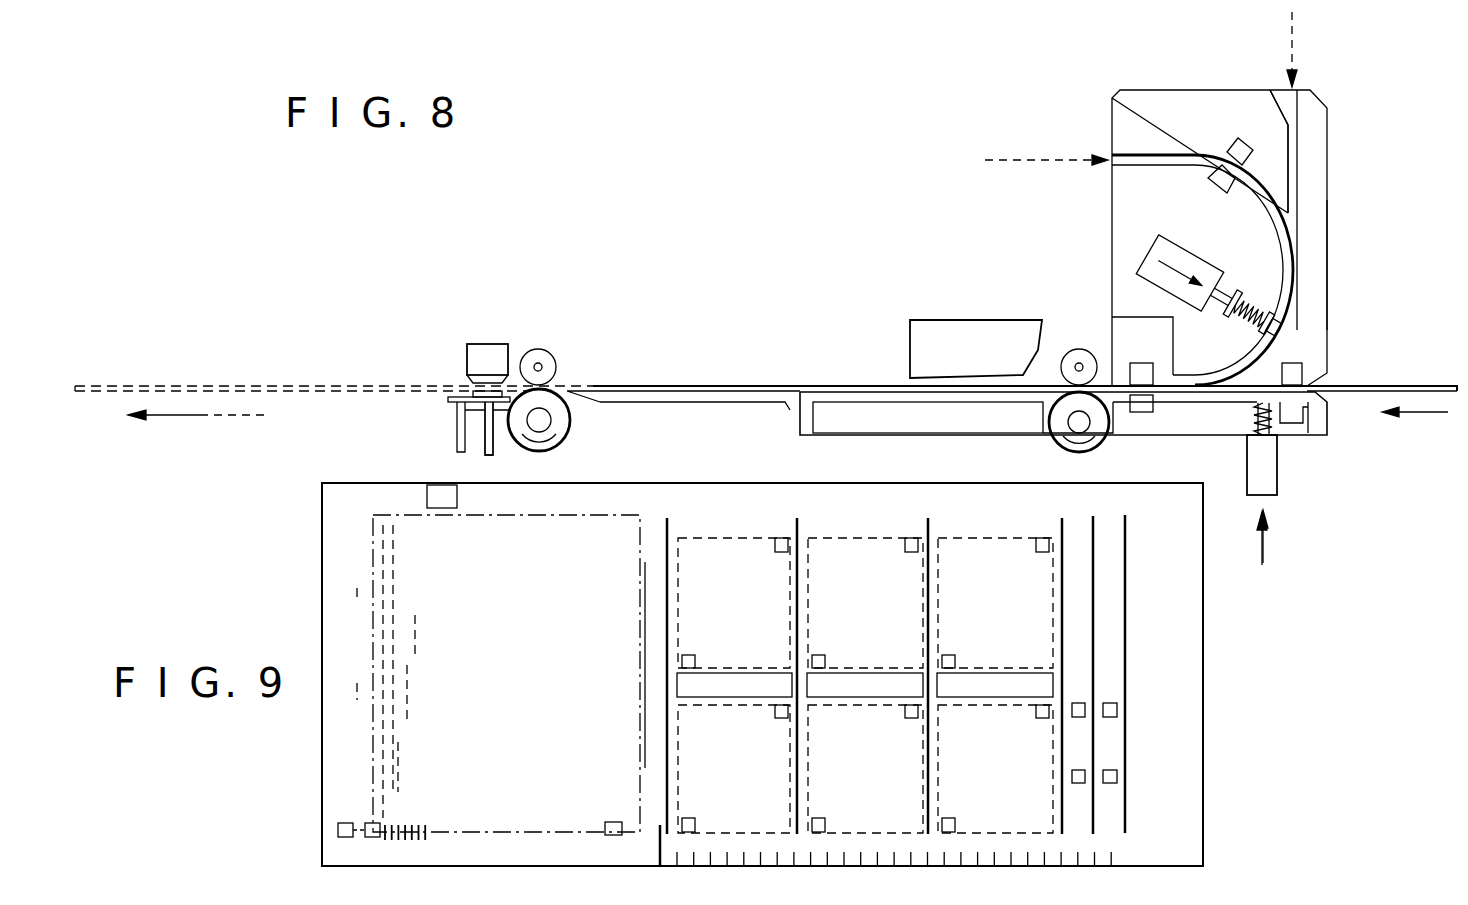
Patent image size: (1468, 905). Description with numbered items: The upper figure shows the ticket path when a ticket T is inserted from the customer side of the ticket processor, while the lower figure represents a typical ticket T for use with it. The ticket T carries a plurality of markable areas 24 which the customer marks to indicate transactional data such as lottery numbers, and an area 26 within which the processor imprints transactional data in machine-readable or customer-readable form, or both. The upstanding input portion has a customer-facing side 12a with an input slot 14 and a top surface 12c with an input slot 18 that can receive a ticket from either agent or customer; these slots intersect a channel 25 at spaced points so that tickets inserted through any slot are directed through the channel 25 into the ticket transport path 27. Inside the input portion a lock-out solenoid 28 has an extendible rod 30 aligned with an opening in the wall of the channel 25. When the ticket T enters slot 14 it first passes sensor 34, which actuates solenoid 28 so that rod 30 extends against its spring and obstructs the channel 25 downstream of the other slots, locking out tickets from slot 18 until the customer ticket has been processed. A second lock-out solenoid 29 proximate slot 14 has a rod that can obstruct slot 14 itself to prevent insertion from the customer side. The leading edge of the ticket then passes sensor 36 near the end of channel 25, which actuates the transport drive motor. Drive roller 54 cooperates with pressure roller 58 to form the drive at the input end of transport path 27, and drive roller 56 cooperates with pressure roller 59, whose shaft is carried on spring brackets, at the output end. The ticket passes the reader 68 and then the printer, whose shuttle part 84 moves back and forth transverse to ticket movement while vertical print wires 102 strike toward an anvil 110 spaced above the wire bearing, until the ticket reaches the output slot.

In FIG. 8, the customer side of input portion 12a is at (1328, 268).
In FIG. 8, the top surface of input portion 12c is at (1207, 90).
In FIG. 8, the ticket input slot 14 is at (1318, 384).
In FIG. 8, the ticket input slot 18 is at (1283, 100).
In FIG. 9, the markable areas 24 is at (752, 617).
In FIG. 8, the channel 25 is at (1270, 231).
In FIG. 9, the imprint area 26 is at (526, 696).
In FIG. 8, the ticket transport path 27 is at (847, 397).
In FIG. 8, the ticket lock-out solenoid 28 is at (1181, 256).
In FIG. 8, the second ticket lock-out solenoid 29 is at (1280, 462).
In FIG. 8, the extendible rod 30 is at (1256, 292).
In FIG. 8, the sensor 34 is at (1295, 372).
In FIG. 8, the third ticket sensor 36 is at (1140, 365).
In FIG. 8, the drive roller 54 is at (1065, 447).
In FIG. 8, the drive roller 56 is at (568, 423).
In FIG. 8, the pressure roller 58 is at (1075, 352).
In FIG. 8, the pressure roller 59 is at (553, 357).
In FIG. 8, the reader 68 is at (1000, 330).
In FIG. 8, the shuttle part 84 is at (458, 420).
In FIG. 8, the print wires 102 is at (492, 445).
In FIG. 8, the anvil 110 is at (467, 353).
In FIG. 8, the ticket T is at (1430, 388).
In FIG. 9, the ticket T is at (1185, 699).